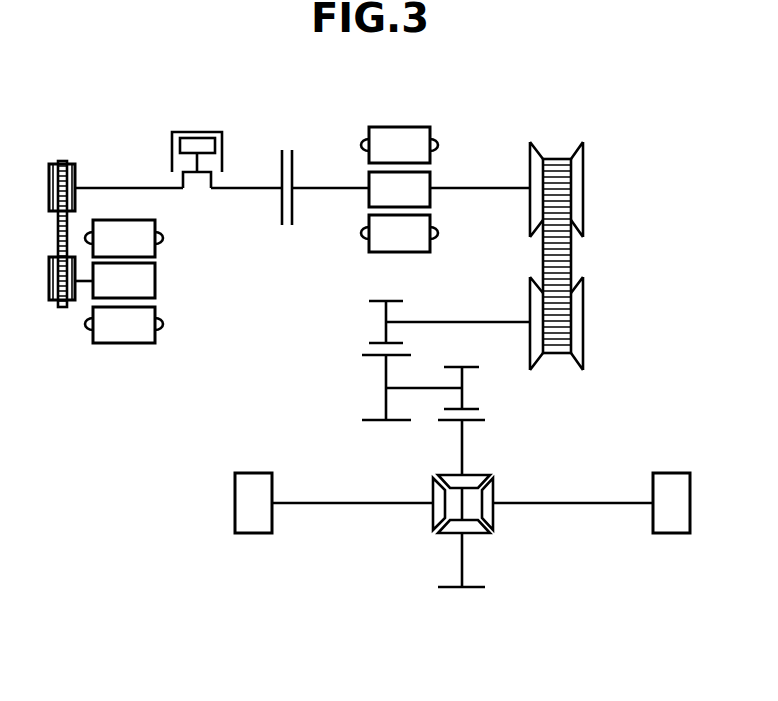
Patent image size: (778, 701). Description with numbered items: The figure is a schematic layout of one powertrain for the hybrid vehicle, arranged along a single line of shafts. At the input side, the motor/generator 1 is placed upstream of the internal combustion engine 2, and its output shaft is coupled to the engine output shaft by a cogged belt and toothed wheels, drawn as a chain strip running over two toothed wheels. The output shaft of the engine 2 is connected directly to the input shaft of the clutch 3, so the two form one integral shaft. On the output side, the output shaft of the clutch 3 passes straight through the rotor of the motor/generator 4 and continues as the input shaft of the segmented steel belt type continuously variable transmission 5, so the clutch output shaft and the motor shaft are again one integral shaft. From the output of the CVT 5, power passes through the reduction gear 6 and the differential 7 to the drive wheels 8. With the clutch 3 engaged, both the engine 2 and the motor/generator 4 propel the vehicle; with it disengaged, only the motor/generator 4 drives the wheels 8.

The motor/generator 1 is at (125, 278).
The internal combustion engine 2 is at (196, 145).
The clutch 3 is at (288, 213).
The motor/generator 4 is at (399, 164).
The continuously variable automatic transmission (CVT) 5 is at (590, 256).
The reduction gear 6 is at (378, 388).
The differential gear 7 is at (509, 531).
The drive wheels 8 is at (253, 533).